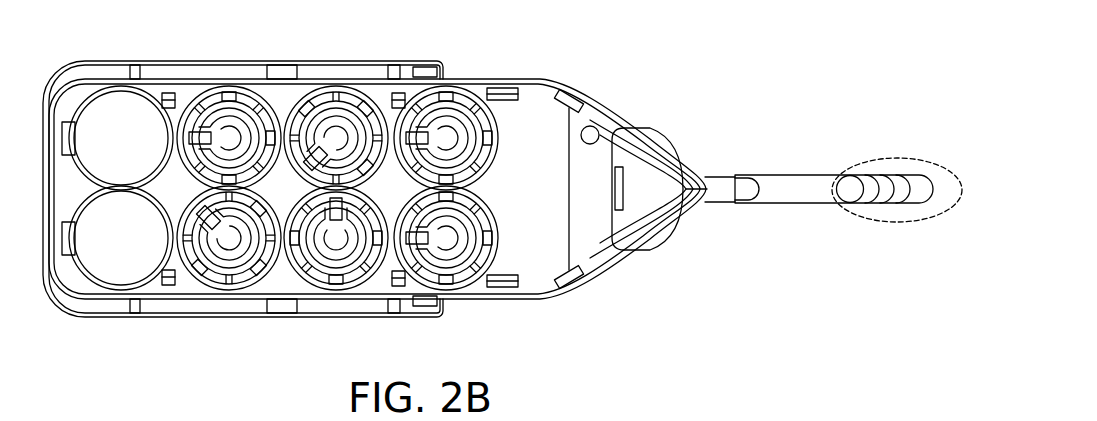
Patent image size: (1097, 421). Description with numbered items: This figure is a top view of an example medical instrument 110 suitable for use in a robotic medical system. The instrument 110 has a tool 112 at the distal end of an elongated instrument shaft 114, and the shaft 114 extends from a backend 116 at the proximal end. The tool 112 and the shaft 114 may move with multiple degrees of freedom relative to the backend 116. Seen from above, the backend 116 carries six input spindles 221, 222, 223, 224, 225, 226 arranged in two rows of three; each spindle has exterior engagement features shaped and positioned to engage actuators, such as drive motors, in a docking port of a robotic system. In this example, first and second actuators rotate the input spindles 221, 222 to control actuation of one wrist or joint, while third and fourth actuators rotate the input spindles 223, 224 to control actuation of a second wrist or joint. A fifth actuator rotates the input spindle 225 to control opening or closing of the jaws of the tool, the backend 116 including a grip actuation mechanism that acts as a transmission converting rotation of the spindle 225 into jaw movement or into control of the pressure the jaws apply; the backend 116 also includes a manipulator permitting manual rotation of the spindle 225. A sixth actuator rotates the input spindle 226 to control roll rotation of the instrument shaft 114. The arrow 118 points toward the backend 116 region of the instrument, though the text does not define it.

The medical instrument 110 is at (731, 70).
The tool 112 is at (897, 158).
The instrument shaft 114 is at (780, 175).
The backend 116 is at (513, 200).
The cartridge holder 118 is at (683, 281).
The input spindle 221 is at (236, 235).
The input spindle 222 is at (228, 128).
The input spindle 223 is at (338, 245).
The input spindle 224 is at (335, 128).
The input spindle 225 is at (447, 245).
The input spindle 226 is at (458, 128).